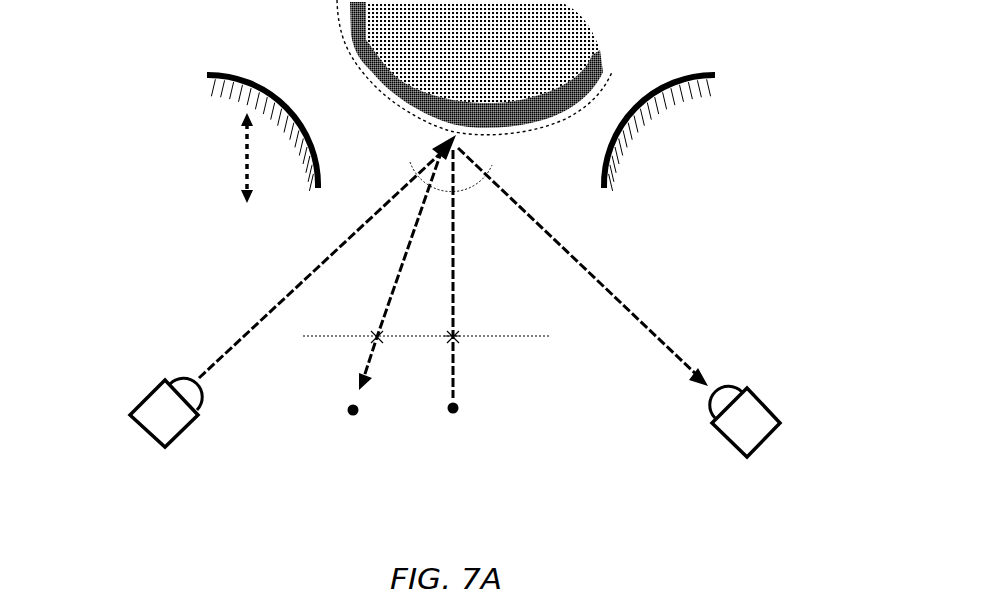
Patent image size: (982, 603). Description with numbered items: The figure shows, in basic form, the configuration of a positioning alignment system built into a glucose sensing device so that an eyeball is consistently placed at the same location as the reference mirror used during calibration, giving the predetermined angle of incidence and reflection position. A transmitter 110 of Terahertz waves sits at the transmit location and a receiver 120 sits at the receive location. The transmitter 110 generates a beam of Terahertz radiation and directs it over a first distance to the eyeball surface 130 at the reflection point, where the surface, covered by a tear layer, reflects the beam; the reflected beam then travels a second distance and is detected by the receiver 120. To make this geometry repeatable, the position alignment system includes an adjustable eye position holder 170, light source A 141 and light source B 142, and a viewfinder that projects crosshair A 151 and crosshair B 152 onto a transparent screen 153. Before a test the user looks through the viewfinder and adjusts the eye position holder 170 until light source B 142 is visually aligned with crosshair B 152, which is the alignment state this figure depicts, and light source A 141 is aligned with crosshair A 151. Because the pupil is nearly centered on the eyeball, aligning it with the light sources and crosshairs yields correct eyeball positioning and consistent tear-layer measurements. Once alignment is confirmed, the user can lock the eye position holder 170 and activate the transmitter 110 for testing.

The transmitter 110 is at (155, 410).
The receiver 120 is at (767, 425).
The eyeball surface 130 is at (438, 133).
The light source A 141 is at (463, 417).
The light source B 142 is at (345, 410).
The crosshair A 151 is at (455, 357).
The crosshair B 152 is at (372, 341).
The transparent screen 153 is at (567, 345).
The adjustable eye position holder 170 is at (205, 92).